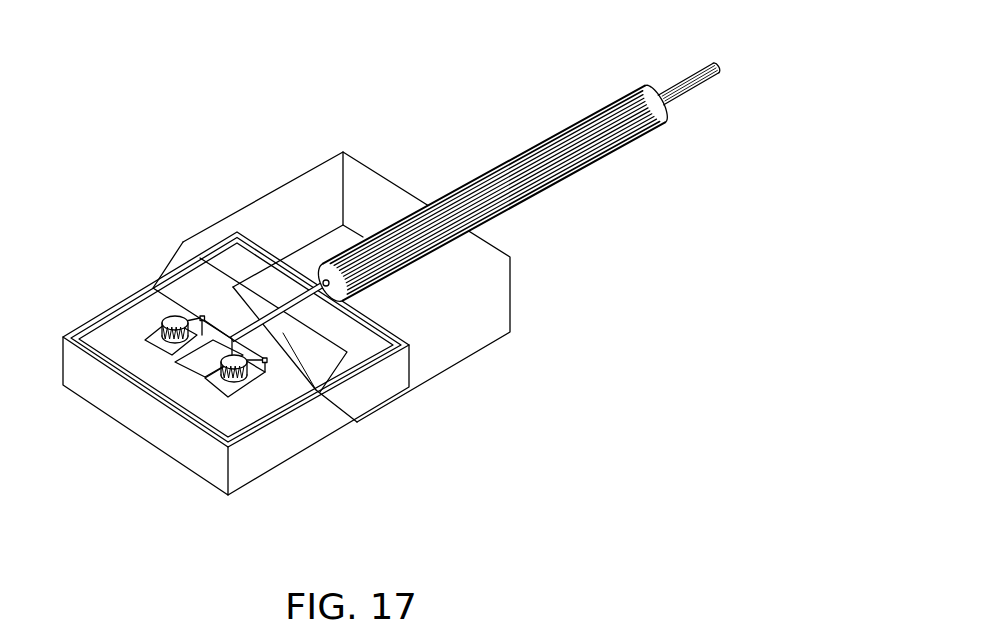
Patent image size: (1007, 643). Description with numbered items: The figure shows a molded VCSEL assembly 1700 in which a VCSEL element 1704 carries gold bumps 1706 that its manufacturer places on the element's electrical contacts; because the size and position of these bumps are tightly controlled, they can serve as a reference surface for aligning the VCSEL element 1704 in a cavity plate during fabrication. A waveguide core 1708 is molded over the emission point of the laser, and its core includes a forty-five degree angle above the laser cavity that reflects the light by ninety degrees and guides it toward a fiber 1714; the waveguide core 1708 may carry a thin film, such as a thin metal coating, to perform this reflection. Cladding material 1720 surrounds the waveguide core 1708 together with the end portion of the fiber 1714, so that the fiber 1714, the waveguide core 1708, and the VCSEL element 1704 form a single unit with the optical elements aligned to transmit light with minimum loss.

The molded VCSEL assembly 1700 is at (145, 187).
The VCSEL element 1704 is at (171, 457).
The gold bumps 1706 is at (163, 316).
The waveguide core 1708 is at (357, 422).
The fiber 1714 is at (521, 203).
The cladding material 1720 is at (468, 354).